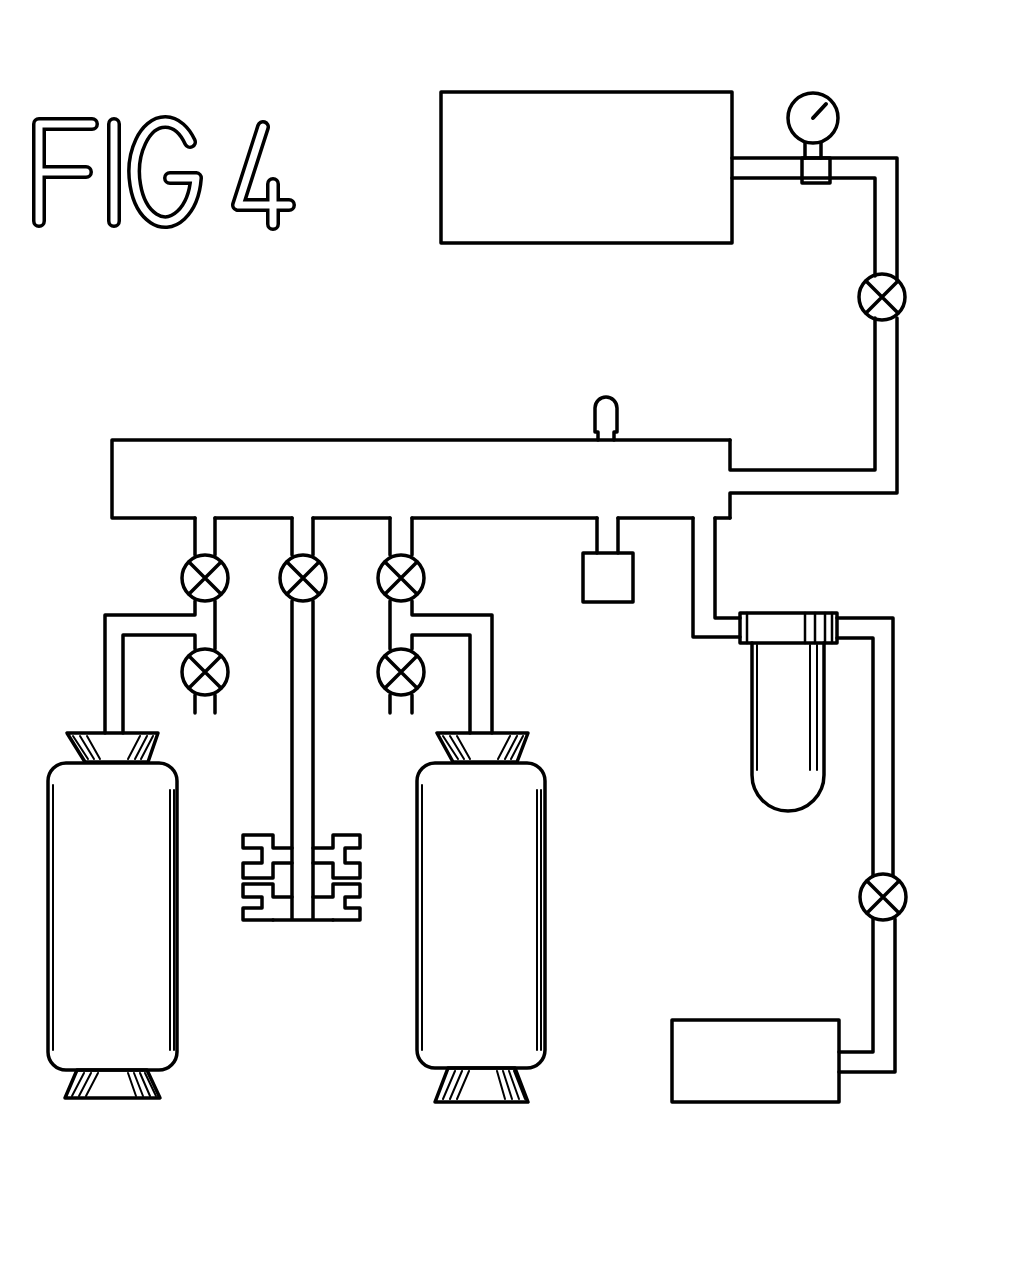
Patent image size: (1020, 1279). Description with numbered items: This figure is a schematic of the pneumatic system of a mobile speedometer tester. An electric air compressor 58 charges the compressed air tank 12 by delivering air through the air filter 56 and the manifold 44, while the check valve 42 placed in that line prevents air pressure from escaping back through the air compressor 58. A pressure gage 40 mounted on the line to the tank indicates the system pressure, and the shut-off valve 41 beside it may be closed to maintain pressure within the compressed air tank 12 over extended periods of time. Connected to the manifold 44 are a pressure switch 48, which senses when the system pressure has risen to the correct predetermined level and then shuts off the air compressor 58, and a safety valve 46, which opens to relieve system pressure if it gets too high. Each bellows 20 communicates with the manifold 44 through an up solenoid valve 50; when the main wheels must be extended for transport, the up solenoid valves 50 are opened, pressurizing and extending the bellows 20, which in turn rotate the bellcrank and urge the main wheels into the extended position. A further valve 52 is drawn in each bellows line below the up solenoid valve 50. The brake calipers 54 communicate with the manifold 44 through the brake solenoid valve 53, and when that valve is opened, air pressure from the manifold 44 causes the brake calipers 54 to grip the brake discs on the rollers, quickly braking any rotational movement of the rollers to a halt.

The compressed air tank 12 is at (440, 210).
The bellows 20 is at (110, 1102).
The pressure gage 40 is at (813, 93).
The shut-off valve 41 is at (859, 298).
The check valve 42 is at (856, 895).
The manifold 44 is at (413, 440).
The safety valve 46 is at (617, 415).
The pressure switch 48 is at (612, 607).
The up solenoid valve 50 is at (183, 578).
The valves 52 is at (228, 692).
The brake solenoid valve 53 is at (283, 592).
The brake calipers 54 is at (243, 868).
The air filter 56 is at (752, 700).
The air compressor 58 is at (760, 1108).